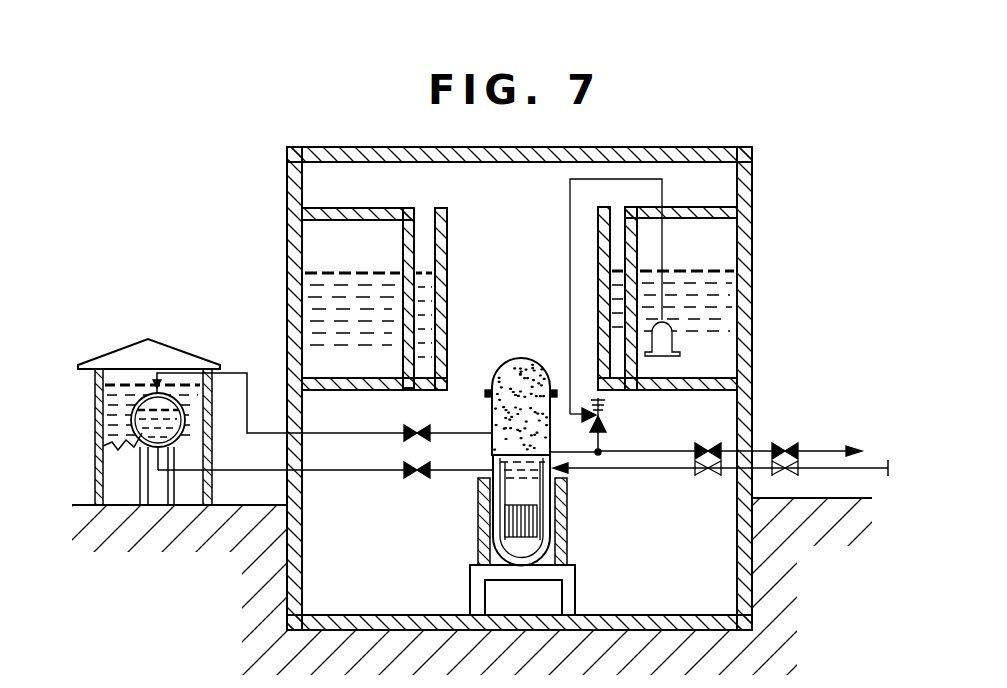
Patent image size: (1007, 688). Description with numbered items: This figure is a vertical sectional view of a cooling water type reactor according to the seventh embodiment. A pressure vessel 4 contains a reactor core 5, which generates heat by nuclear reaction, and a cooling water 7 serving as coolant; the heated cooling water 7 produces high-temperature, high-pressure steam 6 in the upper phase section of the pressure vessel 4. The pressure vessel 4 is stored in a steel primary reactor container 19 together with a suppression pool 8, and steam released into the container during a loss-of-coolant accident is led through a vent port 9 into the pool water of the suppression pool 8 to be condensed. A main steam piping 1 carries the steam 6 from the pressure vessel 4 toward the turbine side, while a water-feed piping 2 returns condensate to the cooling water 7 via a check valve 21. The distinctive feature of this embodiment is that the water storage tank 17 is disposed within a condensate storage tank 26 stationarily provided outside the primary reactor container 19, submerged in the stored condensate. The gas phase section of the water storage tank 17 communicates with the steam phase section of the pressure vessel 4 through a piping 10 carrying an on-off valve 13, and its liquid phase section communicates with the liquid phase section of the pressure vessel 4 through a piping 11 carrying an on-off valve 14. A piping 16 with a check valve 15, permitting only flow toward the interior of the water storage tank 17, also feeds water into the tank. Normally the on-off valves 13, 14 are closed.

The main steam piping 1 is at (833, 450).
The water-feed piping 2 is at (876, 462).
The pressure vessel 4 is at (520, 388).
The reactor core 5 is at (522, 590).
The steam 6 is at (516, 388).
The cooling water 7 is at (532, 454).
The suppression pool 8 is at (725, 283).
The vent port 9 is at (638, 357).
The piping 10 is at (370, 433).
The piping 11 is at (378, 472).
The on-off valve 13 is at (420, 428).
The on-off valve 14 is at (422, 478).
The check valve 15 is at (103, 441).
The piping 16 is at (118, 450).
The water storage tank 17 is at (146, 405).
The primary reactor container 19 is at (752, 345).
The check valve 21 is at (742, 476).
The condensate storage tank 26 is at (126, 349).